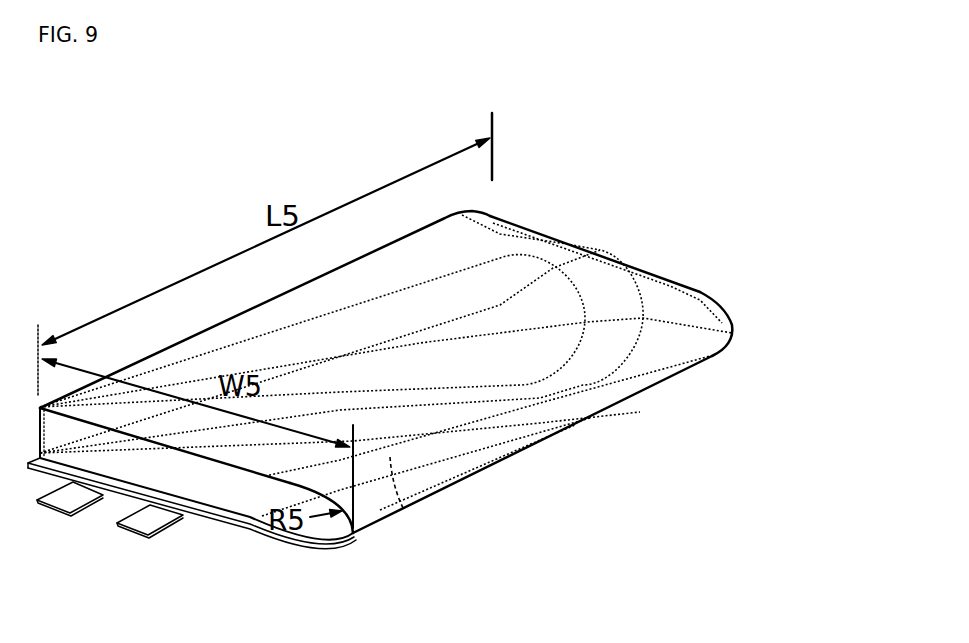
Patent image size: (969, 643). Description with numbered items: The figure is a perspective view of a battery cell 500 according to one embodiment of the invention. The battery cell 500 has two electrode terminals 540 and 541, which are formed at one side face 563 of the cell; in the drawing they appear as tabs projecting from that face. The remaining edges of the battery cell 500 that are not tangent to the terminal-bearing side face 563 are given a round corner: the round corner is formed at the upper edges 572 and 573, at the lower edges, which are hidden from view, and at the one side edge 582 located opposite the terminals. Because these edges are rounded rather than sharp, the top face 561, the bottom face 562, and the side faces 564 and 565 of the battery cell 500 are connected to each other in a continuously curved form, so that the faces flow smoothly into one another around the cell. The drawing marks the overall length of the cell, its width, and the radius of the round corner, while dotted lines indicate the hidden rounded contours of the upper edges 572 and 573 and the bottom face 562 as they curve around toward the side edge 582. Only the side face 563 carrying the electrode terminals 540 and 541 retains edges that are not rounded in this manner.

The battery cell 500 is at (146, 228).
The electrode terminal 540 is at (62, 495).
The electrode terminal 541 is at (142, 522).
The top face 561 is at (403, 337).
The bottom face 562 is at (407, 505).
The side face 563 is at (235, 502).
The side face 564 is at (543, 441).
The side face 565 is at (647, 263).
The upper edge 572 is at (602, 380).
The upper edge 573 is at (577, 247).
The side edge 582 is at (735, 333).